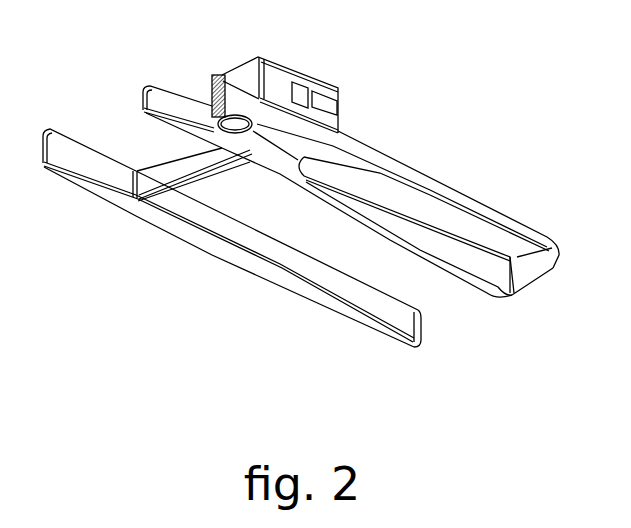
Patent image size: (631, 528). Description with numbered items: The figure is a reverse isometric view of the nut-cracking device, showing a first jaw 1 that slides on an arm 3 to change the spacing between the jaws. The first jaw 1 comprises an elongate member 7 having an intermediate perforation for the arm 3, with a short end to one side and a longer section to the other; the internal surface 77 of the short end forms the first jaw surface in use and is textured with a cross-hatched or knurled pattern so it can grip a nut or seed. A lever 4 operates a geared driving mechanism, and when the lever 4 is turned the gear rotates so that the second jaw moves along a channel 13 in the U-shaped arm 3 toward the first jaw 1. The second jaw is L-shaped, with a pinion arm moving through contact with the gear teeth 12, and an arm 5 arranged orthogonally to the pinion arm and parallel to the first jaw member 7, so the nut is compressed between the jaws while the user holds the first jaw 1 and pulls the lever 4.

The first jaw 1 is at (77, 150).
The arm 3 is at (165, 165).
The lever 4 is at (428, 177).
The arm 5 is at (143, 93).
The elongate member 7 is at (212, 256).
The gear teeth 12 is at (212, 88).
The channel 13 is at (203, 177).
The internal surface 77 is at (115, 173).